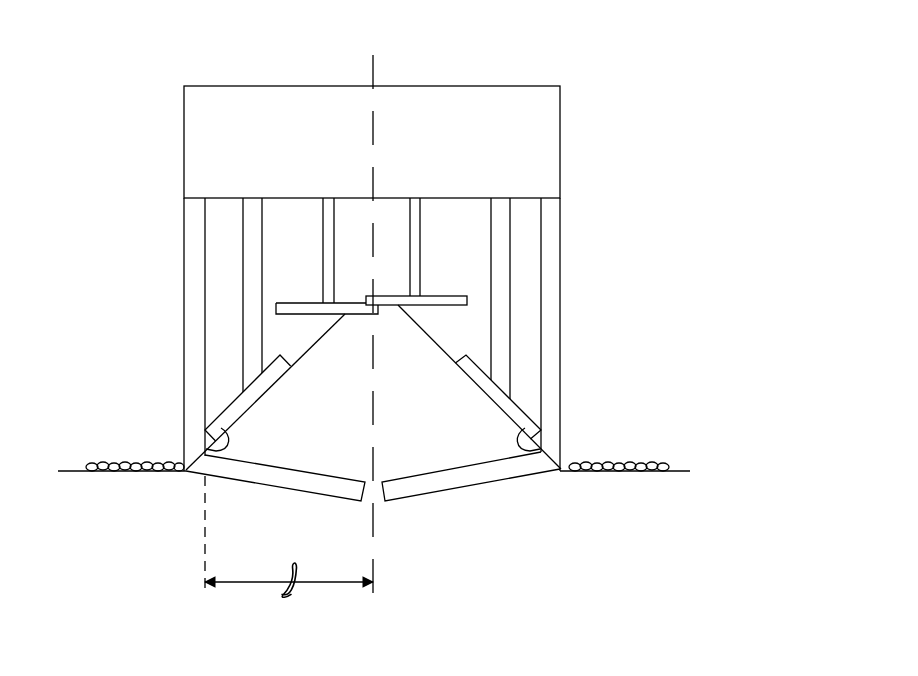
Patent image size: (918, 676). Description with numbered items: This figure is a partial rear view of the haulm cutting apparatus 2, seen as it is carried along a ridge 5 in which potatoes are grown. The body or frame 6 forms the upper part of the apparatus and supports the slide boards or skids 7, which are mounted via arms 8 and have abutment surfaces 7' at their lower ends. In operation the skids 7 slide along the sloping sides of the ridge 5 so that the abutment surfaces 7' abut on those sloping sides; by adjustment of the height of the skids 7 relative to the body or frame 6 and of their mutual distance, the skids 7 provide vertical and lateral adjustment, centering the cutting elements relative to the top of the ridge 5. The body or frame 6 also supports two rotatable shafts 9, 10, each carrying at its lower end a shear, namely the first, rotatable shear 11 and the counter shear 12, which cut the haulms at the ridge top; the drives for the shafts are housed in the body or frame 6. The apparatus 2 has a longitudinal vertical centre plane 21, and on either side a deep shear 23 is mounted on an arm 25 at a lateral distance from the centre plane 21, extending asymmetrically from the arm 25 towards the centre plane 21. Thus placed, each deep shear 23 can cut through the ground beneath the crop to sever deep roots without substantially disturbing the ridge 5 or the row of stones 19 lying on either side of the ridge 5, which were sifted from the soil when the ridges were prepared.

The haulm cutting apparatus 2 is at (581, 54).
The body or frame 6 is at (560, 132).
The longitudinal vertical centre plane 21 is at (410, 52).
The arm 25 is at (598, 272).
The arms 8 is at (256, 254).
The rotatable shaft 10 is at (334, 254).
The rotatable shaft 9 is at (420, 254).
The counter shear 12 is at (287, 303).
The first, rotatable shear 11 is at (463, 305).
The slide boards or skids 7 is at (376, 387).
The abutment surfaces 7' is at (379, 425).
The deep shear 23 is at (165, 533).
The ridge 5 is at (380, 426).
The row of stones 19 is at (660, 431).